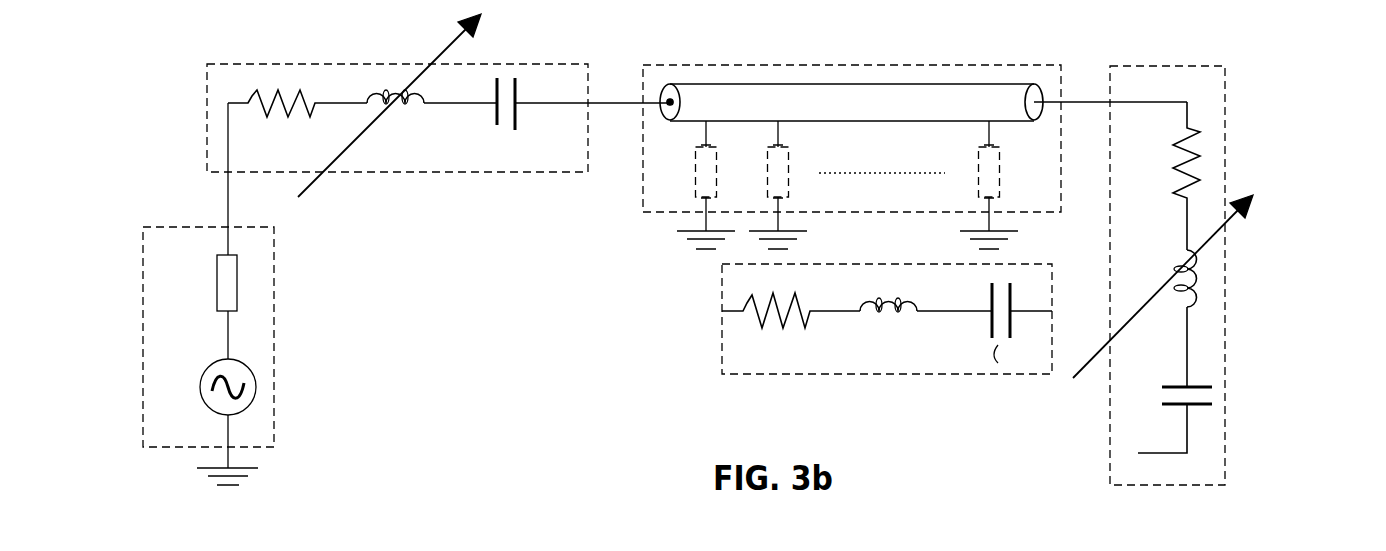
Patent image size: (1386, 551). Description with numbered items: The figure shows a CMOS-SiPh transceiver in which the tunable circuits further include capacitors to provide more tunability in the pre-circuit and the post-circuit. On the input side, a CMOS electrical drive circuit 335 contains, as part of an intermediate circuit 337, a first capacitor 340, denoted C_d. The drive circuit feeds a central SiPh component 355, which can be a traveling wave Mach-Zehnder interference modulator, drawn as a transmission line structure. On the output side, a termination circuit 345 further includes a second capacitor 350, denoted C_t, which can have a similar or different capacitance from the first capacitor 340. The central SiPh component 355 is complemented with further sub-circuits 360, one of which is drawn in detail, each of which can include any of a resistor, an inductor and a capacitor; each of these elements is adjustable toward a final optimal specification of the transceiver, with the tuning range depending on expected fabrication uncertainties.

The CMOS electrical drive circuit 335 is at (274, 328).
The intermediate circuit 337 is at (438, 221).
The first capacitor 340 is at (497, 110).
The termination circuit 345 is at (1225, 328).
The second capacitor 350 is at (1200, 405).
The central SiPh component 355 is at (655, 212).
The sub-circuits 360 is at (979, 190).